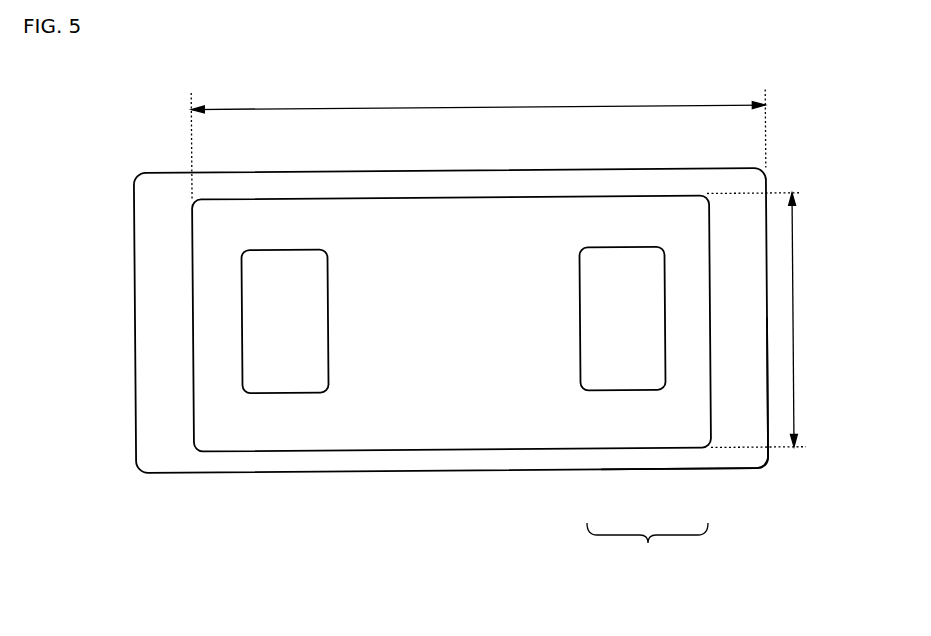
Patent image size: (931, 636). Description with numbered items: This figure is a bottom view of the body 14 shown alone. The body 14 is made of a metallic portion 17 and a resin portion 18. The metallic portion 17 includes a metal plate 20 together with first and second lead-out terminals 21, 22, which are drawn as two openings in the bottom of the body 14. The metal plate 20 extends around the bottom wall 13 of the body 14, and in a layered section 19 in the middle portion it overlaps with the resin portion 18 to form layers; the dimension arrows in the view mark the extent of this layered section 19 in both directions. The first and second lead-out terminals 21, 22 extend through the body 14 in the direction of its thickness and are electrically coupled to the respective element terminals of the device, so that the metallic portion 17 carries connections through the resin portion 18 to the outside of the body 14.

The bottom wall 13 is at (427, 238).
The body 14 is at (278, 92).
The metallic portion 17 is at (647, 548).
The resin portion 18 is at (397, 435).
The layered section 19 is at (510, 107).
The metal plate 20 is at (690, 458).
The first lead-out terminal 21 is at (275, 388).
The second lead-out terminal 22 is at (605, 385).